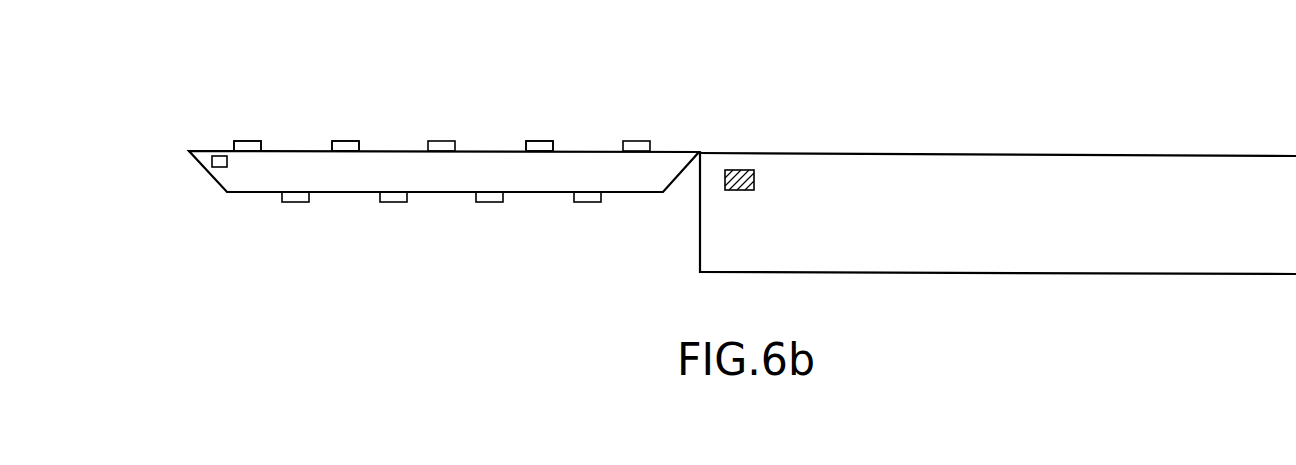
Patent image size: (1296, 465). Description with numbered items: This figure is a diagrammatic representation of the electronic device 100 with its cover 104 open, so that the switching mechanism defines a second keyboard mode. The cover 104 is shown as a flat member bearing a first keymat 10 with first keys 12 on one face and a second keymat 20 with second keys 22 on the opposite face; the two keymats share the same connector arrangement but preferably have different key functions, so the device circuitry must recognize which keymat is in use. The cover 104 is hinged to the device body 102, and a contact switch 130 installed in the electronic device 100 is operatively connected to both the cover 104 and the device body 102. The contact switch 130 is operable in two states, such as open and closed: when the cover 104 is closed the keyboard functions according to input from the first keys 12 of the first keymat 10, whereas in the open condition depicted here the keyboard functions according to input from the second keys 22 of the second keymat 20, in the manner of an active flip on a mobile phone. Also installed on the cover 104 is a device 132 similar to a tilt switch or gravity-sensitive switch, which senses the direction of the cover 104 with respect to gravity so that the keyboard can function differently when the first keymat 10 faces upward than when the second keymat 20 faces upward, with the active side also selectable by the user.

The first keymat 10 is at (421, 164).
The first keys 12 is at (296, 203).
The second keymat 20 is at (477, 115).
The second keys 22 is at (253, 140).
The electronic device 100 is at (997, 150).
The device body 102 is at (1097, 192).
The cover 104 is at (627, 177).
The contact switch 130 is at (740, 170).
The device similar to a tilt switch or gravity-sensitive switch 132 is at (218, 156).